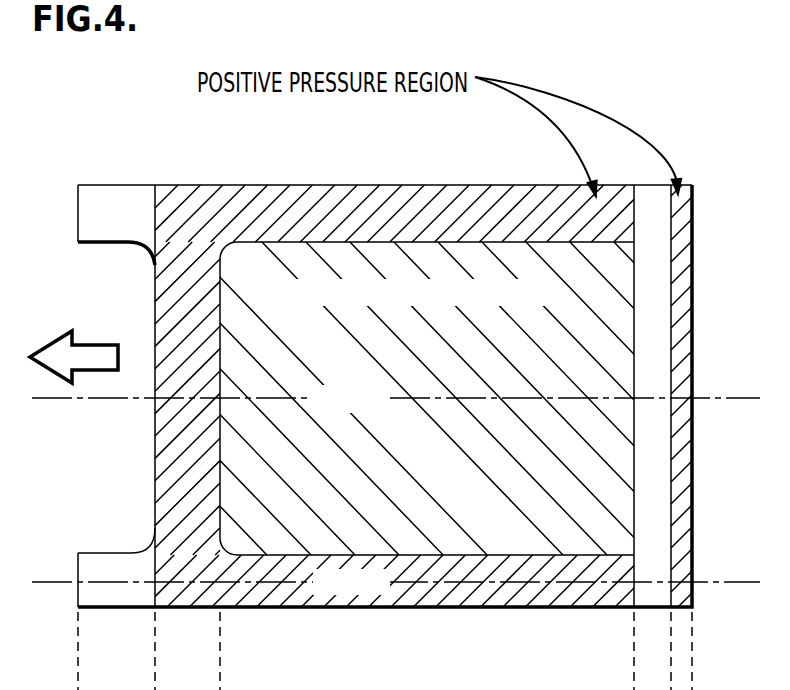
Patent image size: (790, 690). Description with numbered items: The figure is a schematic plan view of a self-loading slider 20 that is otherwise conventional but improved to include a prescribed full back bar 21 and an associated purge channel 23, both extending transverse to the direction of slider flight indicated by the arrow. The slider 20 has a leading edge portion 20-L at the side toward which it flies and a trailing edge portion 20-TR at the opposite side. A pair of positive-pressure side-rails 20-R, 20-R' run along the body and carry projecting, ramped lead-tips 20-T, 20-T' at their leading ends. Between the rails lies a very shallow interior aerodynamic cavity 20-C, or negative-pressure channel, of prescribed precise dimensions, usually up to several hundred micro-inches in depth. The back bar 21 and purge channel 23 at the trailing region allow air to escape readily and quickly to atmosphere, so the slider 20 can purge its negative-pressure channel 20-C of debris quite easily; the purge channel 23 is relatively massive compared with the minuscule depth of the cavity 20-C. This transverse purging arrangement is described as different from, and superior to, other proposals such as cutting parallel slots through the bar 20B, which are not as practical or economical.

The slider 20 is at (118, 130).
The ramped lead-tip 20-T' is at (68, 190).
The bar 20B is at (170, 317).
The side-rail 20-R' is at (394, 191).
The side-rail 20-R is at (394, 607).
The leading edge portion 20-L is at (155, 485).
The interior aerodynamic cavity 20-C is at (412, 493).
The trailing edge portion 20-TR is at (635, 508).
The purge channel 23 is at (654, 595).
The full back bar 21 is at (685, 600).
The ramped lead-tip 20-T is at (116, 594).